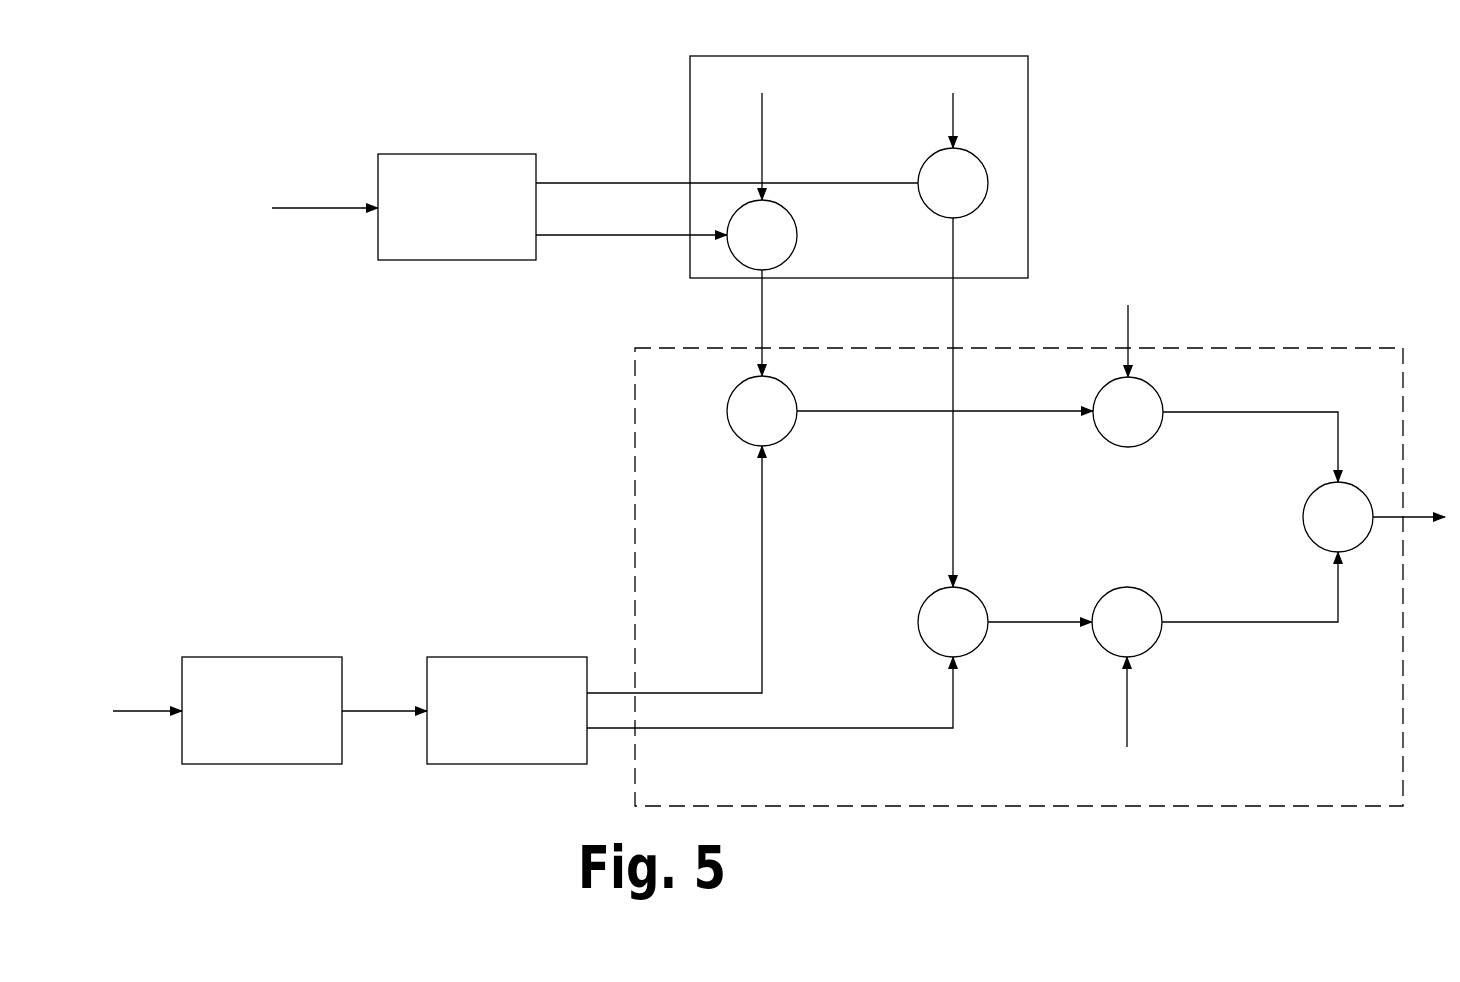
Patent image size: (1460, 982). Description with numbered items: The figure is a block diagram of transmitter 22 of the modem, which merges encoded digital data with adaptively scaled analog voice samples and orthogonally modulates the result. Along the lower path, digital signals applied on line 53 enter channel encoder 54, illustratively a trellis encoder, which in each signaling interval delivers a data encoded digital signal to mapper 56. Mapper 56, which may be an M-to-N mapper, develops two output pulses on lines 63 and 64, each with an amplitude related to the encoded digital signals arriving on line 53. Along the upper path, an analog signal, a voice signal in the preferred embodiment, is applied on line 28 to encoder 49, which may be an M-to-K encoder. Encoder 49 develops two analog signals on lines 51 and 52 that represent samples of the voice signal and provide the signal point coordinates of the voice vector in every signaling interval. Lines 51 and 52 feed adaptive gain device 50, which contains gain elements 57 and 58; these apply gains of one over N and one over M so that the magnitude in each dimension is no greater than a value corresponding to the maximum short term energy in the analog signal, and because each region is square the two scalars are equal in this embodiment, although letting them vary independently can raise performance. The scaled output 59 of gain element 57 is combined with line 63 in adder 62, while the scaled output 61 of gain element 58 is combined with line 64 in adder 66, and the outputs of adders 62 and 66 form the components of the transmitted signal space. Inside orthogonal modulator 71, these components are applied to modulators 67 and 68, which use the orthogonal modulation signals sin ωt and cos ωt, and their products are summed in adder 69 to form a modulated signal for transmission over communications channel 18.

The transmitter 22 is at (232, 55).
The line 28 is at (322, 207).
The encoder 49 is at (457, 207).
The adaptive gain device 50 is at (859, 167).
The line 51 is at (656, 232).
The line 52 is at (683, 178).
The line 53 is at (155, 708).
The channel encoder 54 is at (262, 710).
The mapper 56 is at (507, 710).
The gain element 57 is at (797, 221).
The gain element 58 is at (988, 183).
The output 59 is at (762, 290).
The output 61 is at (953, 326).
The adder 62 is at (735, 436).
The line 63 is at (762, 617).
The line 64 is at (930, 730).
The adder 66 is at (930, 594).
The modulator 67 is at (1095, 428).
The modulator 68 is at (1127, 587).
The adder 69 is at (1305, 530).
The orthogonal modulator 71 is at (1019, 577).
The communications channel 18 is at (1392, 515).